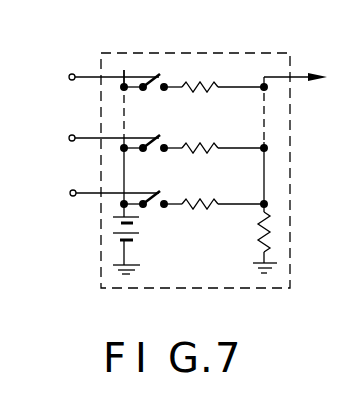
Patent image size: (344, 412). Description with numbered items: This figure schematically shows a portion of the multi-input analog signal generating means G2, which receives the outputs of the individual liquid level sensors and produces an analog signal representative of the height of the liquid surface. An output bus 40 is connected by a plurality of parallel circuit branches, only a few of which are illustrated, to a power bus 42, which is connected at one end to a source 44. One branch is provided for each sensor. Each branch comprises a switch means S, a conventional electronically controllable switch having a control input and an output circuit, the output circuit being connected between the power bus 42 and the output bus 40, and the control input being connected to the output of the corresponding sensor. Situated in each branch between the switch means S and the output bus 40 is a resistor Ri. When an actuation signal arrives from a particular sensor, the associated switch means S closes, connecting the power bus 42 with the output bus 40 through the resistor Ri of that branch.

The output bus 40 is at (265, 177).
The power bus 42 is at (123, 70).
The source 44 is at (137, 226).
The multi-input means G2 is at (167, 53).
The switch means S is at (153, 90).
The resistor Ri is at (193, 88).